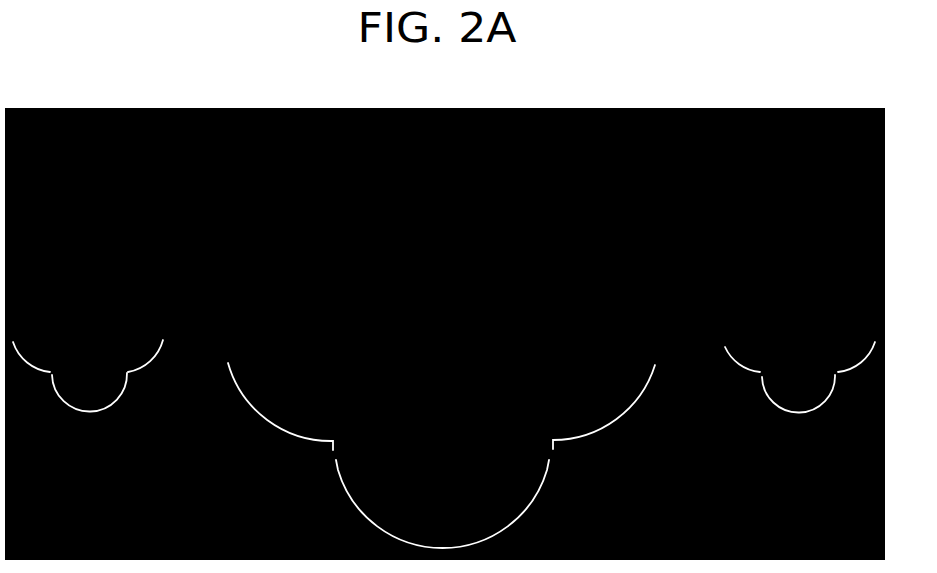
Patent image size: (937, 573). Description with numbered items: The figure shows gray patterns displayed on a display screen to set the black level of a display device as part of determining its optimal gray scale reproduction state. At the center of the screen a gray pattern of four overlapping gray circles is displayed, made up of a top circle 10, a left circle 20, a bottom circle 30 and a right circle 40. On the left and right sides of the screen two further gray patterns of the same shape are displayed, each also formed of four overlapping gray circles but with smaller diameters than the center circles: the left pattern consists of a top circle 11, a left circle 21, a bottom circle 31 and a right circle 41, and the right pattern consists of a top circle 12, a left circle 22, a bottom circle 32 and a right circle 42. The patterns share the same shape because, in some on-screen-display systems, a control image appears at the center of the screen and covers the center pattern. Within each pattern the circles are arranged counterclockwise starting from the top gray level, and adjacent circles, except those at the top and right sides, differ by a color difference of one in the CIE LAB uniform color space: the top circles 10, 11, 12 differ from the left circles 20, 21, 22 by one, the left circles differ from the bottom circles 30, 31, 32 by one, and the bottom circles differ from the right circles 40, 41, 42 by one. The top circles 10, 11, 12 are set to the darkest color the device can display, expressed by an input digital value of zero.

The top gray circle of the center gray pattern 10 is at (445, 334).
The top gray circle of the left gray pattern 11 is at (67, 281).
The top gray circle of the right gray pattern 12 is at (800, 287).
The left gray circle of the center gray pattern 20 is at (280, 383).
The left gray circle of the left gray pattern 21 is at (34, 345).
The left gray circle of the right gray pattern 22 is at (744, 344).
The bottom gray circle of the center gray pattern 30 is at (442, 502).
The bottom gray circle of the left gray pattern 31 is at (89, 386).
The bottom gray circle of the right gray pattern 32 is at (798, 387).
The right gray circle of the center gray pattern 40 is at (604, 383).
The right gray circle of the left gray pattern 41 is at (145, 345).
The right gray circle of the right gray pattern 42 is at (856, 344).